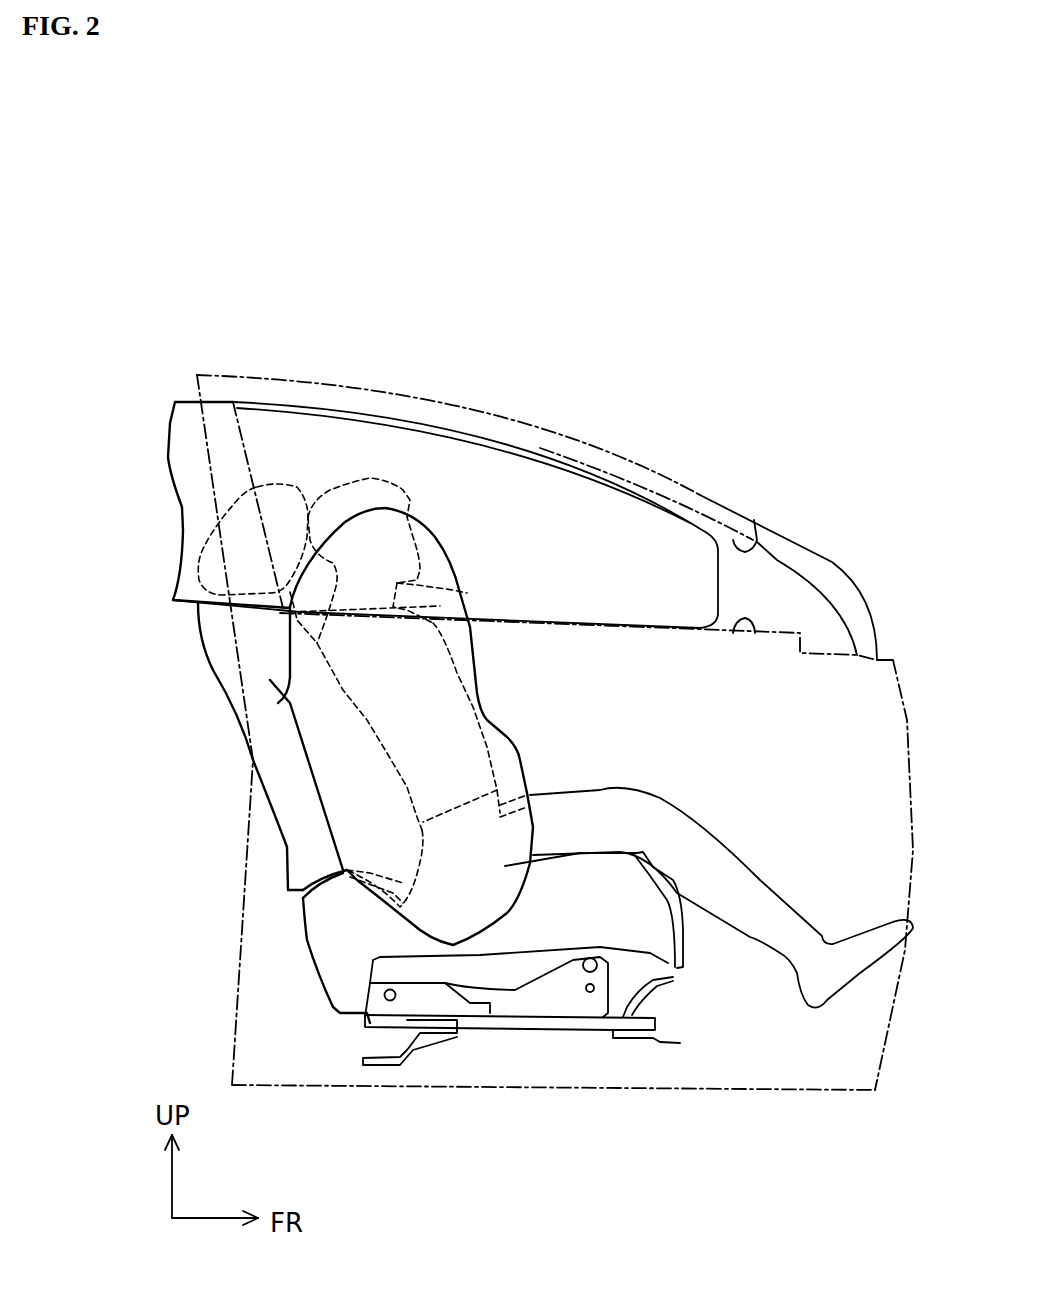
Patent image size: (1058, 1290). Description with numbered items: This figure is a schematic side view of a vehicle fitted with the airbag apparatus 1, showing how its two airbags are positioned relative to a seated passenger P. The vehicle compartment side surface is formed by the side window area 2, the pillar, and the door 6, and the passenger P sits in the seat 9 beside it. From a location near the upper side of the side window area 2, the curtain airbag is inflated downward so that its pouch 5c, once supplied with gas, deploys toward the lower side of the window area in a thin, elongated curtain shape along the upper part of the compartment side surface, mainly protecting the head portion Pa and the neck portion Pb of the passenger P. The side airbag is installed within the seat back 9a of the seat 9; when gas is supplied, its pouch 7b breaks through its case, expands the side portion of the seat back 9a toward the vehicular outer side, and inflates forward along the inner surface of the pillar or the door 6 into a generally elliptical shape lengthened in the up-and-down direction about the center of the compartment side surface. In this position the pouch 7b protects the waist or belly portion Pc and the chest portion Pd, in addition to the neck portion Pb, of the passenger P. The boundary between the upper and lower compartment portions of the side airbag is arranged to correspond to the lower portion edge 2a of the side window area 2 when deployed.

The airbag apparatus 1 is at (553, 407).
The pouch 5c is at (605, 502).
The door 6 is at (833, 560).
The side window area 2 is at (755, 525).
The lower portion edge 2a is at (753, 635).
The seat 9 is at (195, 643).
The seat back 9a is at (282, 788).
The pouch 7b is at (505, 752).
The passenger P is at (697, 813).
The head portion Pa is at (407, 500).
The neck portion Pb is at (460, 593).
The waist portion Pc is at (533, 793).
The chest portion Pd is at (453, 657).